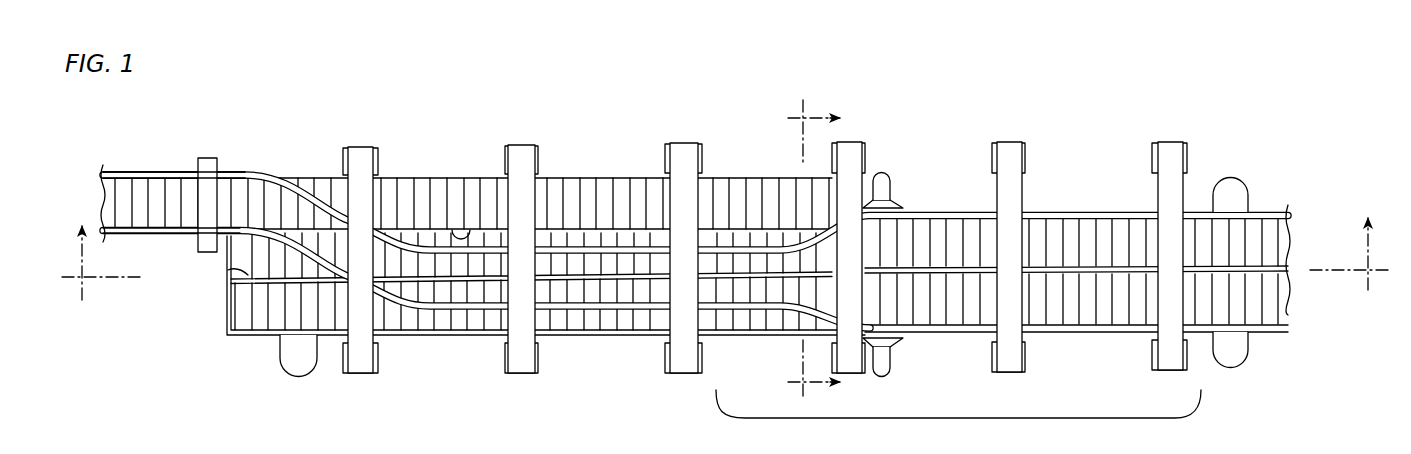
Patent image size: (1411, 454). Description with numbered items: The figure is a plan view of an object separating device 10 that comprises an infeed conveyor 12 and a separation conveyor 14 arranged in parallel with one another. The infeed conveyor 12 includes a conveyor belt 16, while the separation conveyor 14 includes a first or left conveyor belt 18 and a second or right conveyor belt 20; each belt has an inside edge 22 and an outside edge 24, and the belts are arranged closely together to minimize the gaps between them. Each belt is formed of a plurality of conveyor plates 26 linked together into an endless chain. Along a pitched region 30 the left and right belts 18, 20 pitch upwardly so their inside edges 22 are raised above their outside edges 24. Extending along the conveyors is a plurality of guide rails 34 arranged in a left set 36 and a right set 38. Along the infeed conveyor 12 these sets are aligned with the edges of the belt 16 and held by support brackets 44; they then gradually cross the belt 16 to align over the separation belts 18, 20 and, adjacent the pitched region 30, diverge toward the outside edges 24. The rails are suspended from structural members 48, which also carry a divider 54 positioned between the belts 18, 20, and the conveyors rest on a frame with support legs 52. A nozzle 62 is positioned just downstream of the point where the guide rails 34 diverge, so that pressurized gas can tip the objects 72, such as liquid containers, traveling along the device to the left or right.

The object separating device 10 is at (1152, 96).
The infeed conveyor 12 is at (594, 160).
The separation conveyor 14 is at (220, 350).
The conveyor belt 16 is at (715, 178).
The first or left conveyor belt 18 is at (918, 234).
The second or right conveyor belt 20 is at (929, 322).
The inside edge 22 is at (230, 269).
The outside edge 24 is at (398, 178).
The conveyor plates 26 is at (1106, 318).
The pitched region 30 is at (958, 422).
The guide rails 34 is at (240, 174).
The first or left set 36 is at (119, 162).
The second or right set 38 is at (103, 200).
The support brackets 44 is at (207, 158).
The structural members 48 is at (358, 150).
The support legs 52 is at (307, 367).
The divider 54 is at (1292, 266).
The nozzle 62 is at (894, 200).
The objects 72 is at (881, 180).